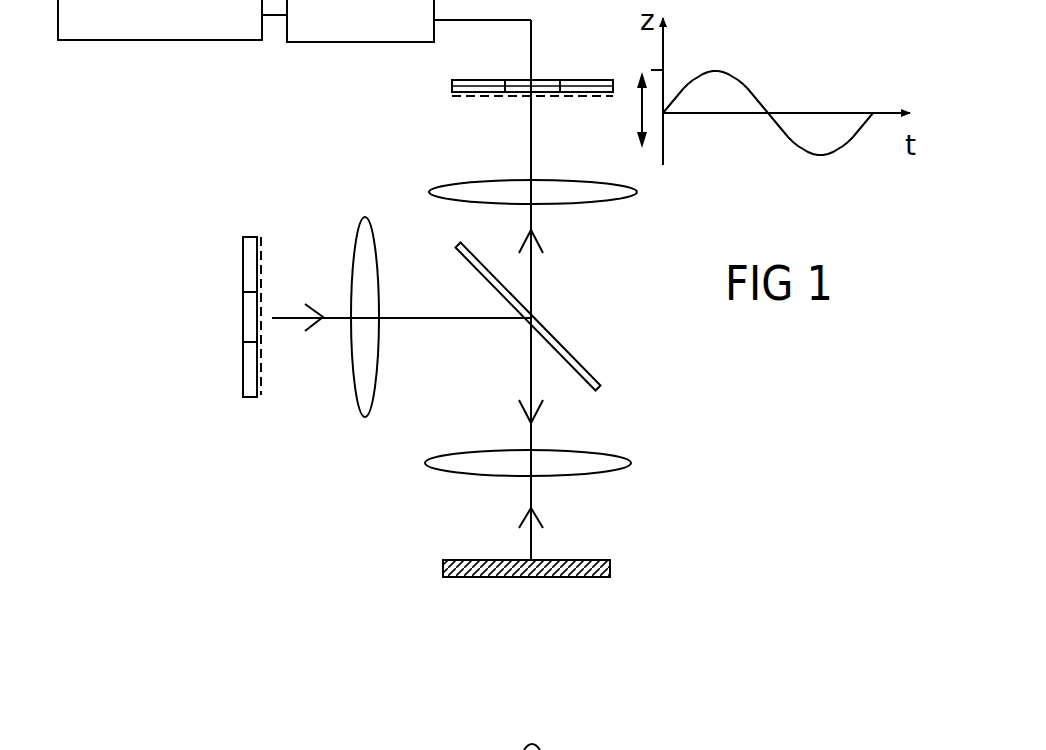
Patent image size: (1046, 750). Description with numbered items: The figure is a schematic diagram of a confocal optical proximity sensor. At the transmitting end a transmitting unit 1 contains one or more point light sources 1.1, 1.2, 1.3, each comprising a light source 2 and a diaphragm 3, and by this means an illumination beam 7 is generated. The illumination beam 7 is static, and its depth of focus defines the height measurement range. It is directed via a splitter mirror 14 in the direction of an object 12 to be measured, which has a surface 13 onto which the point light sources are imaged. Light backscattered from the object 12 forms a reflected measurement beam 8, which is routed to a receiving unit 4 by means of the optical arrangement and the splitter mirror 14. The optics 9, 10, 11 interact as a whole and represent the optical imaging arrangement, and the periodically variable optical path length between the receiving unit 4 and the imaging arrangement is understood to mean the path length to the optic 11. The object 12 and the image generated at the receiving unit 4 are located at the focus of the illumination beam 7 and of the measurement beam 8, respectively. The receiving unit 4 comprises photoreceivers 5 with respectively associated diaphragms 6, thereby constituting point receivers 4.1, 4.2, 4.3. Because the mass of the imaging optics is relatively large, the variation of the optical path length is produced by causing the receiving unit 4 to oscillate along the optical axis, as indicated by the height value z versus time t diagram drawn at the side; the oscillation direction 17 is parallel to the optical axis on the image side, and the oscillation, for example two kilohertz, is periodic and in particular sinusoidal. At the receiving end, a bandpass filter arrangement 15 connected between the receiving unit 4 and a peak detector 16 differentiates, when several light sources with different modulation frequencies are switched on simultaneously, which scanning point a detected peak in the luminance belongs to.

The transmitting unit 1 is at (232, 210).
The point light source 1.1 is at (245, 256).
The point light source 1.2 is at (245, 312).
The point light source 1.3 is at (245, 362).
The light source 2 is at (204, 358).
The diaphragm 3 is at (262, 375).
The receiving unit 4 is at (481, 92).
The point receiver 4.1 is at (593, 80).
The point receiver 4.2 is at (543, 80).
The point receiver 4.3 is at (480, 80).
The photoreceiver 5 is at (452, 88).
The diaphragm 6 is at (488, 98).
The illumination beam 7 is at (296, 314).
The measurement beam 8 is at (531, 280).
The optic 9 is at (364, 420).
The optic 10 is at (632, 463).
The optic 11 is at (608, 200).
The object to be measured 12 is at (595, 549).
The surface 13 is at (585, 560).
The splitter mirror 14 is at (578, 357).
The bandpass filter arrangement 15 is at (326, 43).
The peak detector 16 is at (131, 42).
The oscillation direction 17 is at (640, 108).